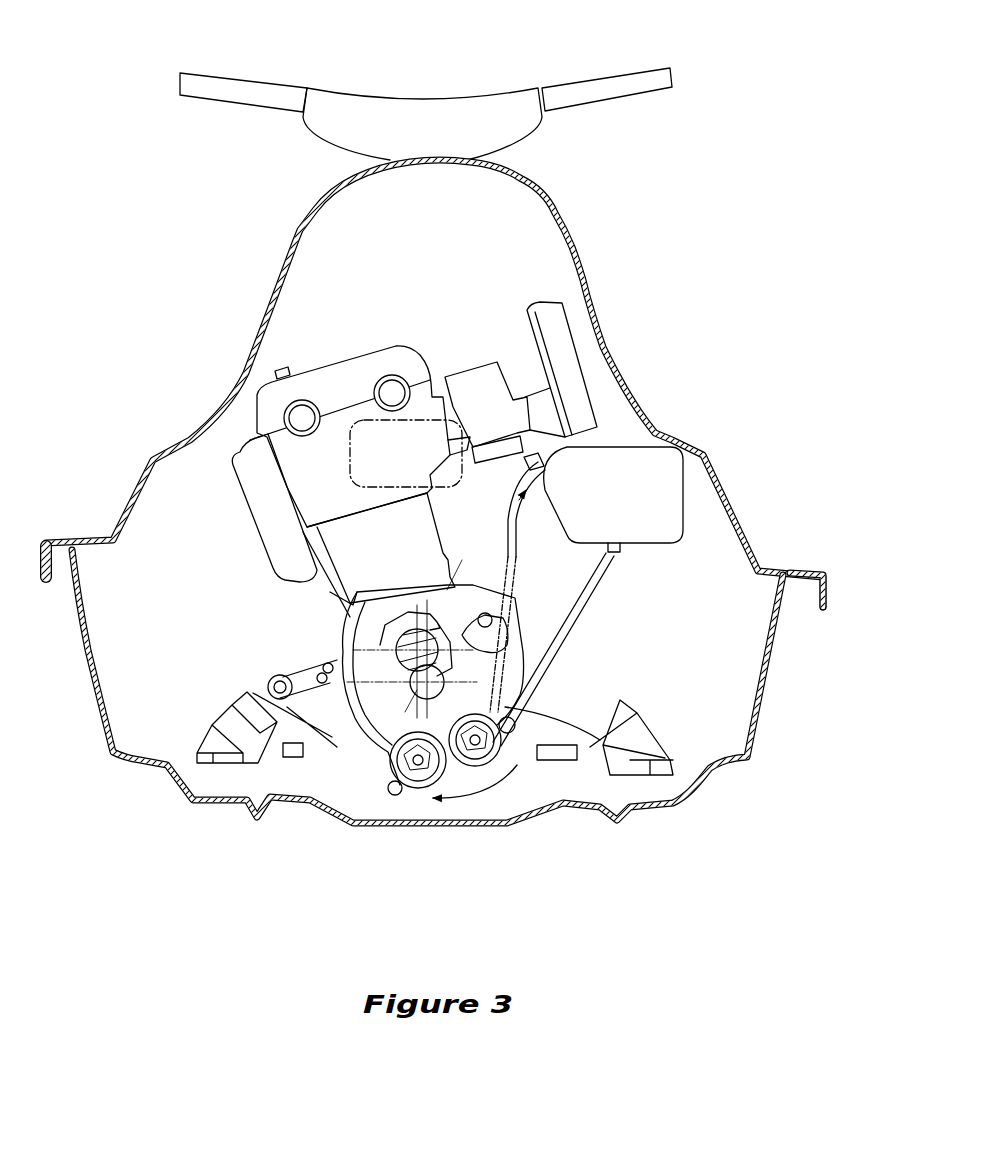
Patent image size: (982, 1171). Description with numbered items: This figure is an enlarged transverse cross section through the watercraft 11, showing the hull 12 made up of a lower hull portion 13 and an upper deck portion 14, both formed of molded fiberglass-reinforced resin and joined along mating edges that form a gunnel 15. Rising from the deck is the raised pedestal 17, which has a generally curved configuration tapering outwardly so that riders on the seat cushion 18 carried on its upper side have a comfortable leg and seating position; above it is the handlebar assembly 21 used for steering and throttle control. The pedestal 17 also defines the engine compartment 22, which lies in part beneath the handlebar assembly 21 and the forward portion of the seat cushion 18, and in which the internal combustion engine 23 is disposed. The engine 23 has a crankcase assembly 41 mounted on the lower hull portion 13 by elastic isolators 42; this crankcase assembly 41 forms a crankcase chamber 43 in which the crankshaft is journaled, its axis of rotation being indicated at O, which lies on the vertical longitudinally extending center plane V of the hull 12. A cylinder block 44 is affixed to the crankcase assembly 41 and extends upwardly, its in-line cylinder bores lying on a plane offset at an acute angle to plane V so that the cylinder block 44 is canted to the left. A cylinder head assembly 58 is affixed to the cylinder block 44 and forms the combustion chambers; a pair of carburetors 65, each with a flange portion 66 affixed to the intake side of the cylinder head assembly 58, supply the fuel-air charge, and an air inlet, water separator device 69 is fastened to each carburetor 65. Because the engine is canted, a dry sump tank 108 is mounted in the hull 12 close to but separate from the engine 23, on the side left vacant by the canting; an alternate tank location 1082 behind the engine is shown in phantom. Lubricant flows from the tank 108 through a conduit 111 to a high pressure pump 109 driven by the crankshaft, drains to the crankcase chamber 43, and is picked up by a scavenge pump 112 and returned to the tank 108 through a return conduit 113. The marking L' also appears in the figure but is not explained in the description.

The watercraft 11 is at (700, 235).
The hull 12 is at (745, 535).
The lower hull portion 13 is at (775, 700).
The upper deck portion 14 is at (722, 486).
The gunnel 15 is at (828, 584).
The raised pedestal 17 is at (600, 322).
The seat cushion 18 is at (547, 190).
The handlebar assembly 21 is at (568, 88).
The engine compartment 22 is at (437, 252).
The internal combustion engine 23 is at (406, 345).
The crankcase assembly 41 is at (357, 757).
The elastic isolators 42 is at (220, 700).
The crankcase chamber 43 is at (382, 678).
The cylinder block 44 is at (380, 533).
The cylinder head assembly 58 is at (290, 478).
The carburetors 65 is at (483, 378).
The flange portion 66 is at (462, 470).
The air inlet, water separator device 69 is at (573, 383).
The dry sump tank 108 is at (660, 540).
The alternate dry sump tank location 1082 is at (353, 420).
The high pressure pump 109 is at (435, 785).
The conduit 111 is at (590, 637).
The scavenge pump 112 is at (500, 790).
The return conduit 113 is at (517, 548).
The lubricant level L' is at (463, 559).
The axis of rotation of the crankshaft O is at (400, 707).
The vertical longitudinally extending plane V is at (465, 696).